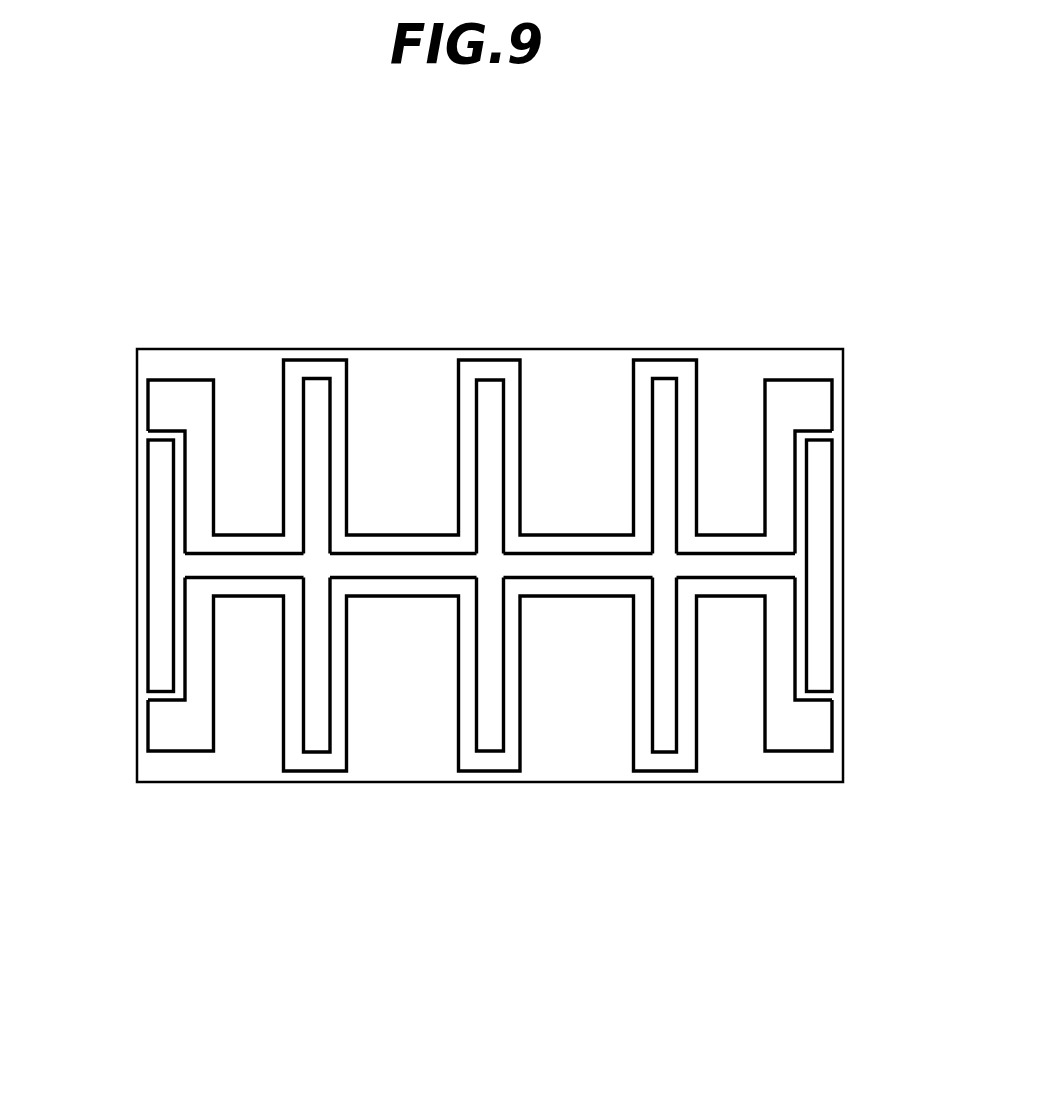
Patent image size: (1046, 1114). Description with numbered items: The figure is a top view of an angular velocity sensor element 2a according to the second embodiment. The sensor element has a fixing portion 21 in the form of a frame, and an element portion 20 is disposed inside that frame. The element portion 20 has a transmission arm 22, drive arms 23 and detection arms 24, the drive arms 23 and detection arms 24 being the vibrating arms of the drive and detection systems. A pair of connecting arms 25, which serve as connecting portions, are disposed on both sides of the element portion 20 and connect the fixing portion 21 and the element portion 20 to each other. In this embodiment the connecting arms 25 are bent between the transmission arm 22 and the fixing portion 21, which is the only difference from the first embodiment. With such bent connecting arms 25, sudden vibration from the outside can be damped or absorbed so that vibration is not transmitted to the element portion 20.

The angular velocity sensor element 2a is at (738, 243).
The element portion 20 is at (485, 611).
The fixing portion 21 is at (788, 363).
The transmission arm 22 is at (210, 568).
The drive arms 23 is at (312, 390).
The detection arms 24 is at (487, 388).
The connecting arms 25 is at (177, 567).